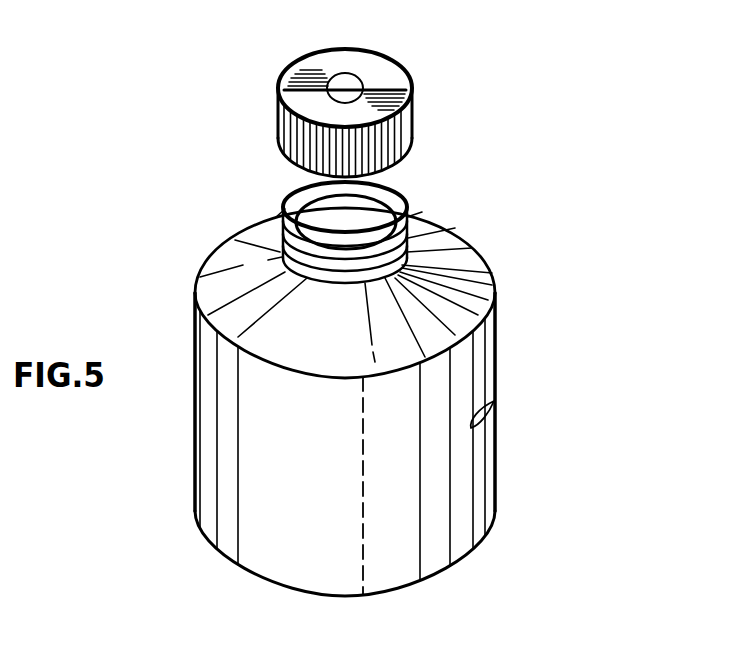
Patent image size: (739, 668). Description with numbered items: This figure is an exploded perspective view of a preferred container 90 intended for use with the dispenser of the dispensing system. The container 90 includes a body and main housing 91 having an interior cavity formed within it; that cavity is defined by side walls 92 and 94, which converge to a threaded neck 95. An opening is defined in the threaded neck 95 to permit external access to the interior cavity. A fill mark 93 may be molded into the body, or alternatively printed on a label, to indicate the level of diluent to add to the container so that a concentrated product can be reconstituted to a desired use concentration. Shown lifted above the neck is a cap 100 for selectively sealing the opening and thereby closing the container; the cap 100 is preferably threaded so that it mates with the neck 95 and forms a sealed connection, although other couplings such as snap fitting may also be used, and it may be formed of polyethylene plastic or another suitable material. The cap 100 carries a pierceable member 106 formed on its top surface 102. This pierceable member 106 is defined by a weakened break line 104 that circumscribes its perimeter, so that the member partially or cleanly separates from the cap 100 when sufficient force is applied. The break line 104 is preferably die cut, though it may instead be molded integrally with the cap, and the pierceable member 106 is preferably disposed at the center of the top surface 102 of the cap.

The container 90 is at (628, 308).
The body and main housing 91 is at (501, 358).
The side wall 92 is at (490, 500).
The fill mark 93 is at (496, 408).
The side wall 94 is at (457, 237).
The threaded neck 95 is at (285, 247).
The cap 100 is at (412, 68).
The top surface 102 is at (349, 62).
The weakened break line 104 is at (328, 80).
The pierceable member 106 is at (333, 90).